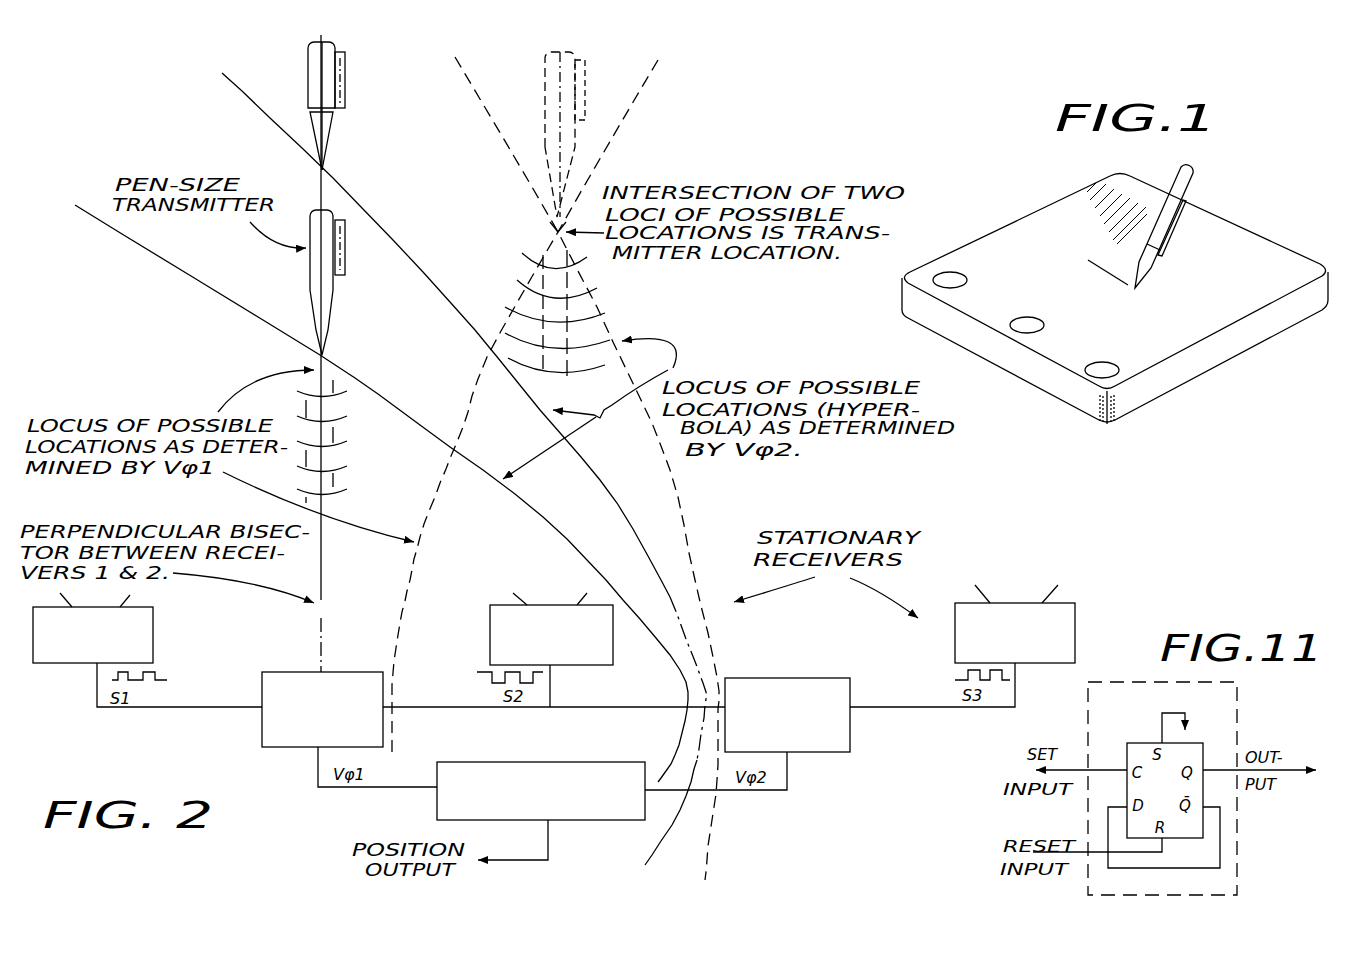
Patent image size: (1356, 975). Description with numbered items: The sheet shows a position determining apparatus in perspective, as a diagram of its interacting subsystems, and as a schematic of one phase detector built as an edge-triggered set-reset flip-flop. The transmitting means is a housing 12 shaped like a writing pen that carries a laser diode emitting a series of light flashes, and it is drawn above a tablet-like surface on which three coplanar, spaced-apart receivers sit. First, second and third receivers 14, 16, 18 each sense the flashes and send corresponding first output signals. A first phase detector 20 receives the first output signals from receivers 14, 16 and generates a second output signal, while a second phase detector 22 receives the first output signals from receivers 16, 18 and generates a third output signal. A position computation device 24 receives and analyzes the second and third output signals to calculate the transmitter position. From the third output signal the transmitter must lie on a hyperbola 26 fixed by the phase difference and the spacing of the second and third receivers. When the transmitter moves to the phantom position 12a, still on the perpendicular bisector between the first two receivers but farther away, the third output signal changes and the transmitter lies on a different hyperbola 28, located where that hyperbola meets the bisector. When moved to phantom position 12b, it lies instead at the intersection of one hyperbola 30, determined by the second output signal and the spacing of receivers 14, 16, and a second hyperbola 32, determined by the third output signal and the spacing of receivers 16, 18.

In FIG. 2, the housing 12 is at (335, 305).
In FIG. 1, the housing 12 is at (1152, 265).
In FIG. 2, the second position of transmitter 12a is at (332, 130).
In FIG. 2, the third position of transmitter 12b is at (540, 145).
In FIG. 2, the first receiver 14 is at (155, 637).
In FIG. 1, the first receiver 14 is at (1112, 362).
In FIG. 2, the second receiver 16 is at (490, 637).
In FIG. 1, the second receiver 16 is at (1044, 323).
In FIG. 2, the third receiver 18 is at (953, 643).
In FIG. 1, the third receiver 18 is at (967, 278).
In FIG. 2, the first phase detector 20 is at (260, 733).
In FIG. 2, the second phase detector 22 is at (850, 732).
In FIG. 2, the position computation device 24 is at (540, 762).
In FIG. 2, the hyperbola 26 is at (543, 517).
In FIG. 2, the hyperbola 28 is at (618, 503).
In FIG. 2, the hyperbola 30 is at (412, 576).
In FIG. 2, the hyperbola 32 is at (682, 503).